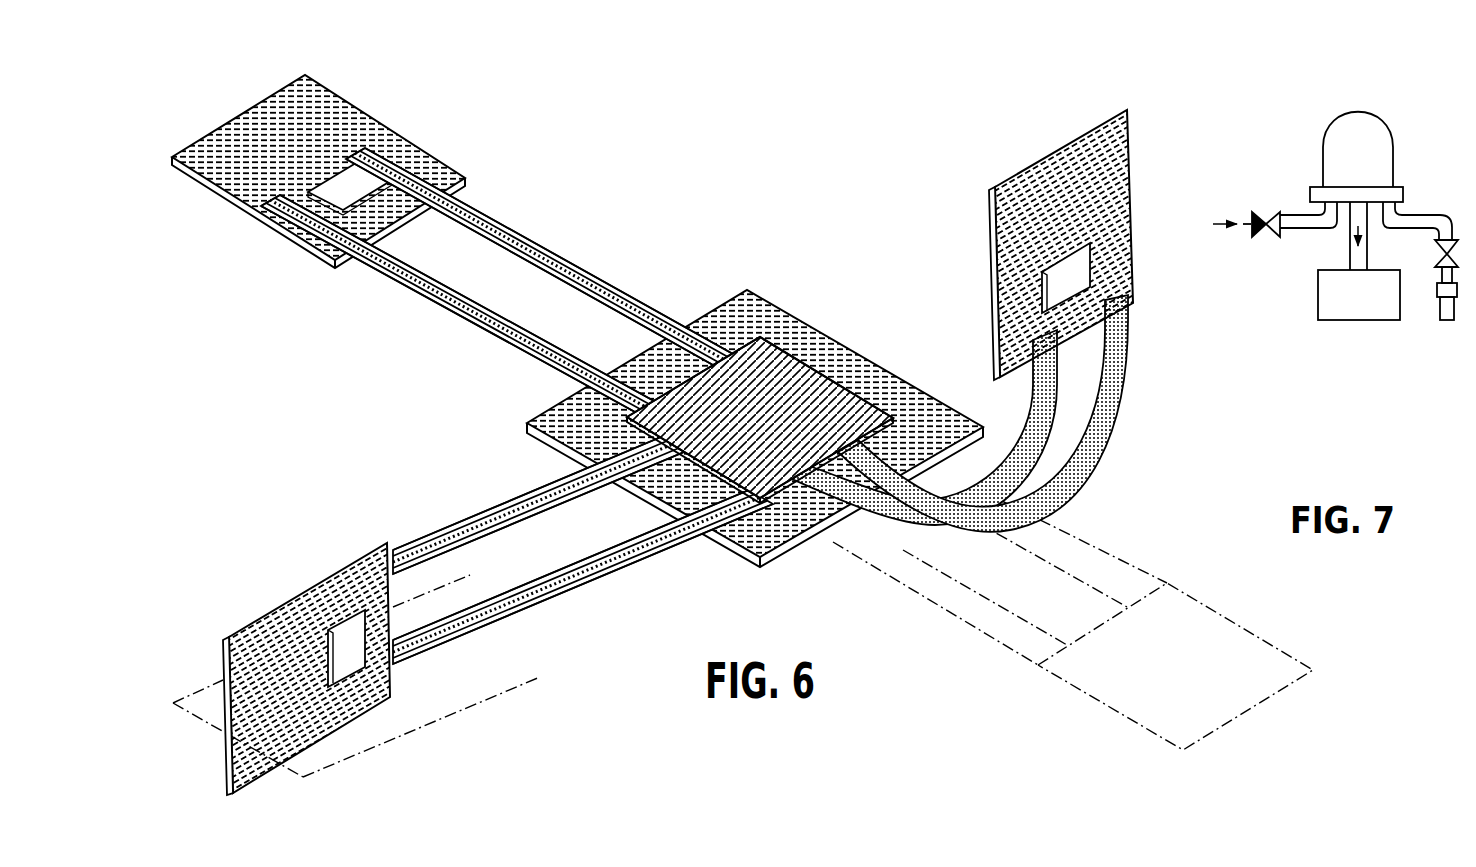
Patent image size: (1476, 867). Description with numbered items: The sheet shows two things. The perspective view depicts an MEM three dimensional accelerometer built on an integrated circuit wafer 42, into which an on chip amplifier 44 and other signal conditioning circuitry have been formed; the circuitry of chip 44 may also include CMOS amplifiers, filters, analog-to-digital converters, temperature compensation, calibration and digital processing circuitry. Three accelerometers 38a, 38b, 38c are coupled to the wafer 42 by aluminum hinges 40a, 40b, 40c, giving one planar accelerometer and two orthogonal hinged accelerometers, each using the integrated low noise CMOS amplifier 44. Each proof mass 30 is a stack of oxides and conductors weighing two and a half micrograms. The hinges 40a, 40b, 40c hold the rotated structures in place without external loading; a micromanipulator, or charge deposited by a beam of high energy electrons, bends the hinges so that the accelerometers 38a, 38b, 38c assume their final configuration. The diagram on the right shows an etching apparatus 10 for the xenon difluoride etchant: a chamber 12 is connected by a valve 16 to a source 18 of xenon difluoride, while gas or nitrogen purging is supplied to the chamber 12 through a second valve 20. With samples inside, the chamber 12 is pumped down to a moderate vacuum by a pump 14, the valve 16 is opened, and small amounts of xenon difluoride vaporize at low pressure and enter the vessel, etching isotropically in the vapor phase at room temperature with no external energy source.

In FIG. 7, the apparatus 10 is at (1331, 246).
In FIG. 7, the chamber 12 is at (1358, 113).
In FIG. 7, the pump 14 is at (1338, 322).
In FIG. 7, the valve 16 is at (1440, 272).
In FIG. 7, the source of xenon difluoride 18 is at (1450, 322).
In FIG. 7, the valve 20 is at (1275, 211).
In FIG. 6, the proof mass 30 is at (331, 427).
In FIG. 6, the accelerometer 38a is at (372, 88).
In FIG. 6, the accelerometer 38b is at (267, 577).
In FIG. 6, the accelerometer 38c is at (978, 217).
In FIG. 6, the aluminum hinge 40a is at (650, 285).
In FIG. 6, the aluminum hinge 40b is at (530, 483).
In FIG. 6, the aluminum hinge 40c is at (1113, 403).
In FIG. 6, the integrated circuit wafer 42 is at (862, 357).
In FIG. 6, the on chip amplifier 44 is at (776, 430).